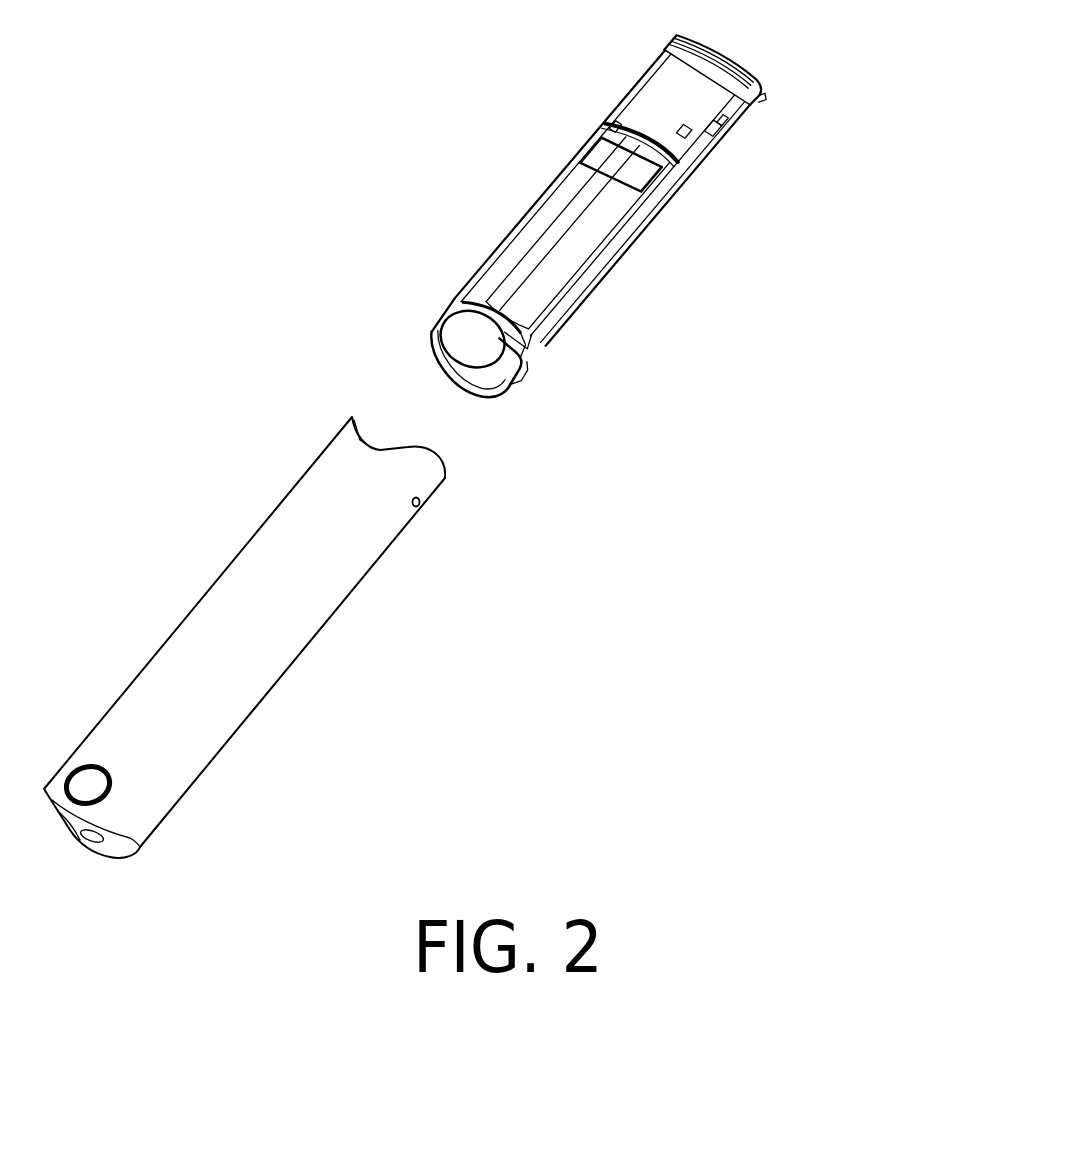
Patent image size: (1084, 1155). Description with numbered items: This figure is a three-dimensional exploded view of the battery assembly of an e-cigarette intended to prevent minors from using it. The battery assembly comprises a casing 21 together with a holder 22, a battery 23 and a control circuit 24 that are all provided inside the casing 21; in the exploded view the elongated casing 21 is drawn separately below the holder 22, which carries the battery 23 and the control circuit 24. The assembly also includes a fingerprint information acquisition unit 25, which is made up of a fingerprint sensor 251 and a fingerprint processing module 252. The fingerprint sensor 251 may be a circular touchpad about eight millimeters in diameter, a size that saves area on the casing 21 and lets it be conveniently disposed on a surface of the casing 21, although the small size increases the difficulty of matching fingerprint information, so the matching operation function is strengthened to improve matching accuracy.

The casing 21 is at (315, 560).
The holder 22 is at (703, 130).
The battery 23 is at (563, 248).
The control circuit 24 is at (627, 172).
The fingerprint information acquisition unit 25 is at (790, 323).
The fingerprint sensor 251 is at (472, 350).
The fingerprint processing module 252 is at (512, 337).